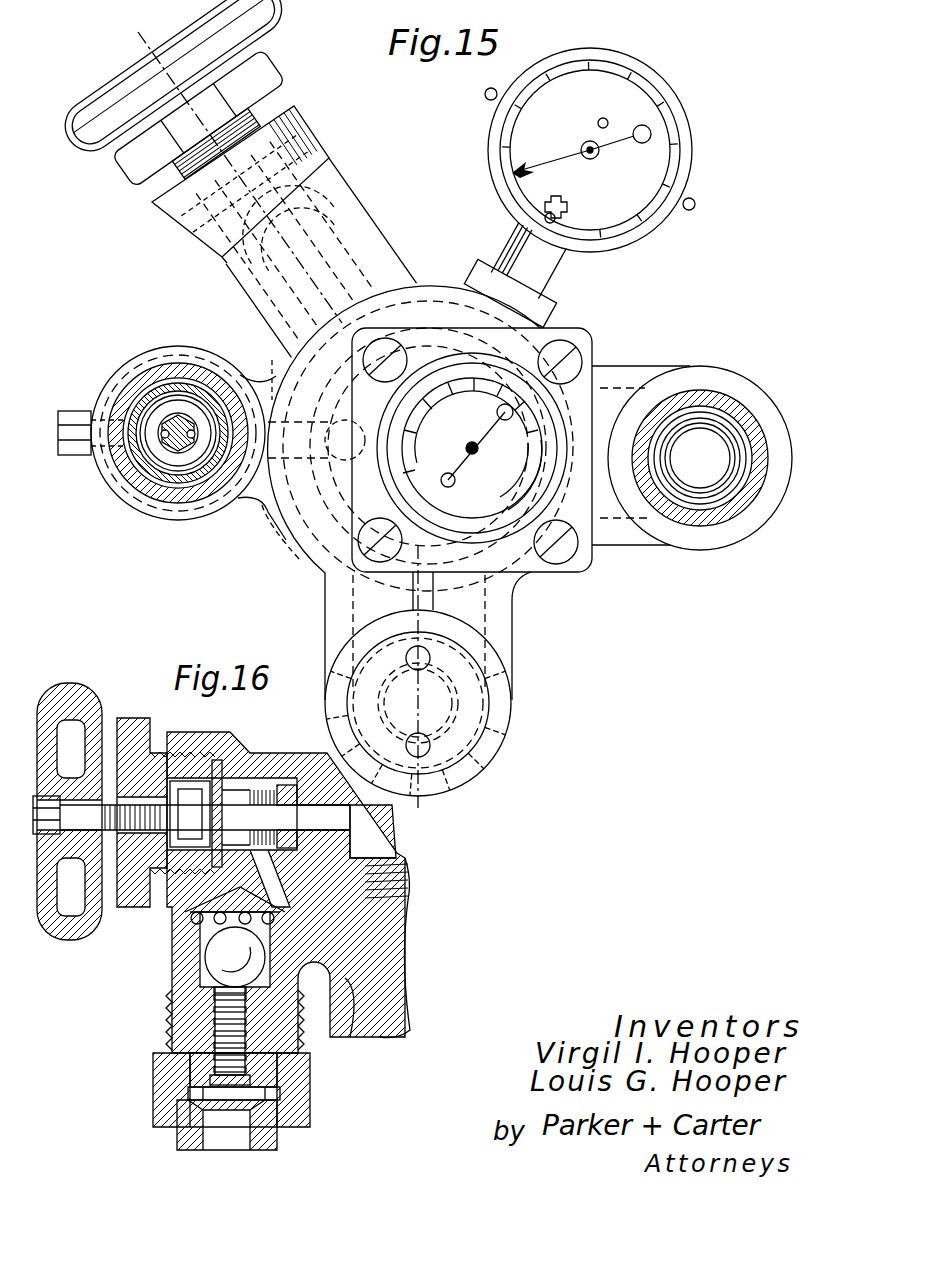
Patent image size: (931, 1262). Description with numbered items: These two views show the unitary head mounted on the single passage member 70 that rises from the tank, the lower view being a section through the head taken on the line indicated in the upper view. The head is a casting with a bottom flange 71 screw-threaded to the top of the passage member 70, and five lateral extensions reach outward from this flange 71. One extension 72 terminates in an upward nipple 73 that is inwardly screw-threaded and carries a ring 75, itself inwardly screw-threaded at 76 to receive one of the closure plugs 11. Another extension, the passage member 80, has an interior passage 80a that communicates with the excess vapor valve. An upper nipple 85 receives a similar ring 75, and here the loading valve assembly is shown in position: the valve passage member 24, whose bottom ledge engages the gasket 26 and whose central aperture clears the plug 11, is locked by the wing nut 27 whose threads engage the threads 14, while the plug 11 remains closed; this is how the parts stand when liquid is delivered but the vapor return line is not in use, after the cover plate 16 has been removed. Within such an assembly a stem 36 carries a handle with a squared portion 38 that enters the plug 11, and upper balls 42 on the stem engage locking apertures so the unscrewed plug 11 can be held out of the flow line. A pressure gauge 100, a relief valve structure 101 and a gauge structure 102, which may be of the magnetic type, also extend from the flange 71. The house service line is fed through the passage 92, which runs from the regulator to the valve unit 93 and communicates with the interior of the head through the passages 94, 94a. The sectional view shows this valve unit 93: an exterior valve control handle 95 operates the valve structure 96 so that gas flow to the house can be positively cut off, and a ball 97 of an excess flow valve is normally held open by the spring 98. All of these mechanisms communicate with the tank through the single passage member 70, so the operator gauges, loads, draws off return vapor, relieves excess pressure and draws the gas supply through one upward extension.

In FIG. 15, the closure plug 11 is at (195, 390).
In FIG. 15, the threads 14 is at (408, 547).
In FIG. 15, the cover plate 16 is at (147, 5).
In FIG. 15, the valve passage member 24 is at (750, 470).
In FIG. 15, the gasket 26 is at (722, 428).
In FIG. 15, the wing nut 27 is at (765, 450).
In FIG. 15, the stem 36 is at (178, 416).
In FIG. 15, the squared portion 38 is at (165, 500).
In FIG. 15, the upper balls 42 is at (158, 440).
In FIG. 15, the single passage member 70 is at (282, 518).
In FIG. 16, the single passage member 70 is at (370, 1002).
In FIG. 16, the bottom flange 71 is at (343, 1000).
In FIG. 15, the lateral extension 72 is at (618, 368).
In FIG. 15, the upward nipple 73 is at (735, 388).
In FIG. 15, the ring 75 is at (666, 472).
In FIG. 15, the inward screw threads 76 is at (728, 468).
In FIG. 15, the passage member 80 is at (250, 522).
In FIG. 15, the interior passage 80a is at (259, 376).
In FIG. 15, the upper nipple 85 is at (122, 365).
In FIG. 16, the passage 92 is at (278, 1140).
In FIG. 16, the valve unit 93 is at (316, 937).
In FIG. 16, the passage 94 is at (253, 873).
In FIG. 15, the passage 94a is at (340, 250).
In FIG. 16, the passage 94a is at (340, 835).
In FIG. 15, the exterior valve control handle 95 is at (262, 22).
In FIG. 16, the exterior valve control handle 95 is at (78, 682).
In FIG. 16, the valve structure 96 is at (270, 790).
In FIG. 16, the ball of excess flow valve 97 is at (222, 958).
In FIG. 16, the spring 98 is at (225, 1015).
In FIG. 15, the pressure gauge 100 is at (628, 222).
In FIG. 15, the relief valve structure 101 is at (472, 695).
In FIG. 15, the gauge structure 102 is at (488, 505).